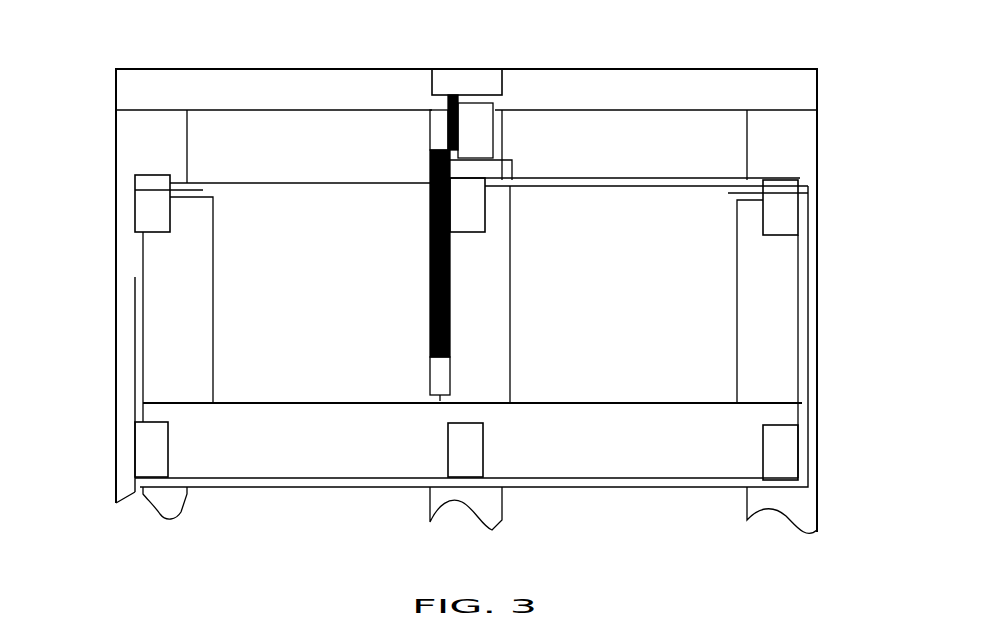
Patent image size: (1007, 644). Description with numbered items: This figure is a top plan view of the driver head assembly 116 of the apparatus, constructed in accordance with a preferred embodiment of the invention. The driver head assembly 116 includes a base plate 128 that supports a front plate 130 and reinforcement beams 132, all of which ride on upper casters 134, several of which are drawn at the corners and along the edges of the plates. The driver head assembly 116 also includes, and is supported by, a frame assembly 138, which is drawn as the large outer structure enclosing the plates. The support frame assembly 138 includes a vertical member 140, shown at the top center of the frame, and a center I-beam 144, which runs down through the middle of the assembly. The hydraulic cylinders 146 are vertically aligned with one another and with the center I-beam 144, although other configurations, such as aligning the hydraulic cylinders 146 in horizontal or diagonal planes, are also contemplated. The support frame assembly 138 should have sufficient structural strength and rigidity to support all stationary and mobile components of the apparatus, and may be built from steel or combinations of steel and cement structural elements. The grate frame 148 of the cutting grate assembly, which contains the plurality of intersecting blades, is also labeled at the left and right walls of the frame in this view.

The driver head assembly 116 is at (90, 354).
The base plate 128 is at (335, 313).
The front plate 130 is at (680, 457).
The reinforcement beams 132 is at (188, 322).
The upper casters 134 is at (467, 199).
The frame assembly 138 is at (262, 60).
The vertical member 140 is at (484, 80).
The center I-beam 144 is at (440, 125).
The hydraulic cylinders 146 is at (493, 272).
The grate frame 148 is at (145, 140).